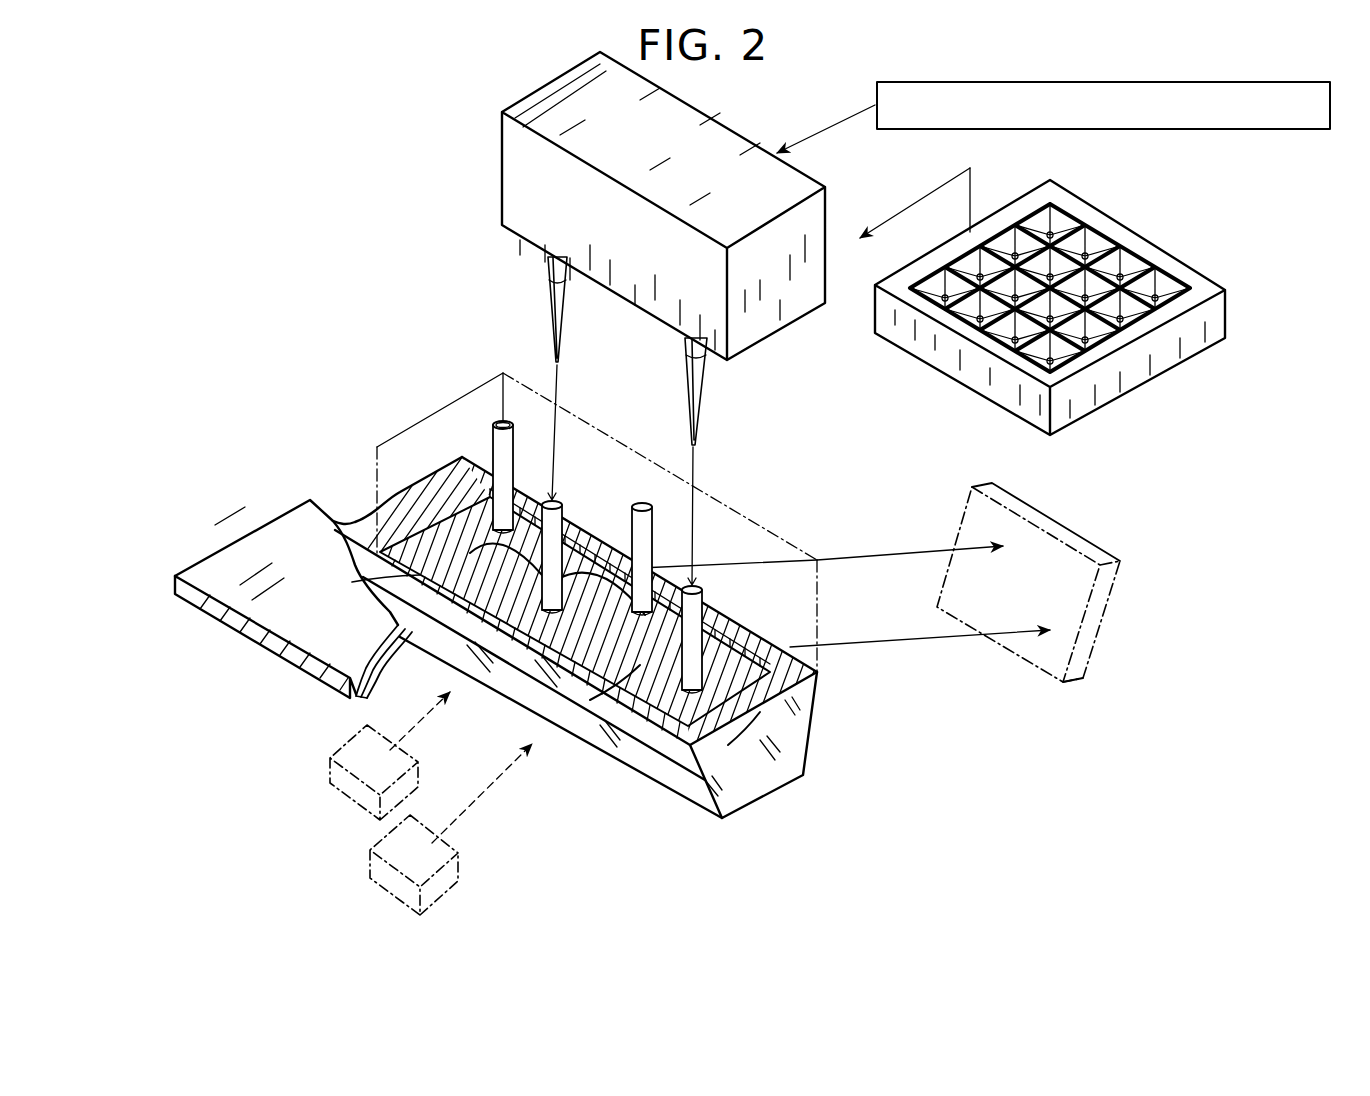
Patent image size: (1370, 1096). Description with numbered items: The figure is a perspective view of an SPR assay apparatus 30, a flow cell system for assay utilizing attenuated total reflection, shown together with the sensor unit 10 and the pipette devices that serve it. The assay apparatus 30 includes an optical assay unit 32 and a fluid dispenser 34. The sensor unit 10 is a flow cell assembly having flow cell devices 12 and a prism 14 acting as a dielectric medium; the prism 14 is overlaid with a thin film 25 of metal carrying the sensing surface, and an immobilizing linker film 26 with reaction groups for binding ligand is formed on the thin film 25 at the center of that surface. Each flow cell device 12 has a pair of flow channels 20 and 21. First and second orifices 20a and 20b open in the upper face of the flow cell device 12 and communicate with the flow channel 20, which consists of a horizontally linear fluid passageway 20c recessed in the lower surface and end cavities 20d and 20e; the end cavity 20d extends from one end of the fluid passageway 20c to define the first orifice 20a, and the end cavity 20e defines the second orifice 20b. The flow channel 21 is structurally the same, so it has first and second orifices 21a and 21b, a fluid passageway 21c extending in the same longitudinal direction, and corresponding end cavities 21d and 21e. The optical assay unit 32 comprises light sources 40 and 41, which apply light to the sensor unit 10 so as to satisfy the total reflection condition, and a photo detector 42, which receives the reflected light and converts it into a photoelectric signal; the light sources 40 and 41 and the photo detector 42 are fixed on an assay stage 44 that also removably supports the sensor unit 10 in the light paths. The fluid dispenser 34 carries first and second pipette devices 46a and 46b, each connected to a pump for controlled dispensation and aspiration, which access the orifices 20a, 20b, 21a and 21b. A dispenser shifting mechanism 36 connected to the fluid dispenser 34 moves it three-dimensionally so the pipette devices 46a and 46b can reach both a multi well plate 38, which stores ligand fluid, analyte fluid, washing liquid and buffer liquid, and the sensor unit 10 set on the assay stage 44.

The sensor unit 10 is at (340, 462).
The flow cell device 12 is at (433, 397).
The prism 14 is at (795, 757).
The flow channel 20 is at (722, 623).
The first orifice 20a is at (694, 587).
The second orifice 20b is at (563, 515).
The fluid passageway 20c is at (625, 690).
The end cavity 20d is at (743, 760).
The end cavity 20e is at (399, 661).
The flow channel 21 is at (484, 450).
The first orifice 21a is at (641, 503).
The second orifice 21b is at (497, 420).
The fluid passageway 21c is at (370, 596).
The nozzle pipe 21d is at (632, 532).
The nozzle pipe 21e is at (518, 420).
The thin film 25 is at (773, 705).
The linker film 26 is at (790, 672).
The SPR assay apparatus 30 is at (300, 177).
The optical assay unit 32 is at (950, 830).
The fluid dispenser 34 is at (500, 162).
The dispenser shifting mechanism 36 is at (1125, 130).
The multi well plate 38 is at (1156, 245).
The light source 40 is at (448, 887).
The light source 41 is at (340, 748).
The photo detector 42 is at (1112, 636).
The assay stage 44 is at (232, 560).
The first pipette device 46a is at (707, 376).
The second pipette device 46b is at (548, 296).